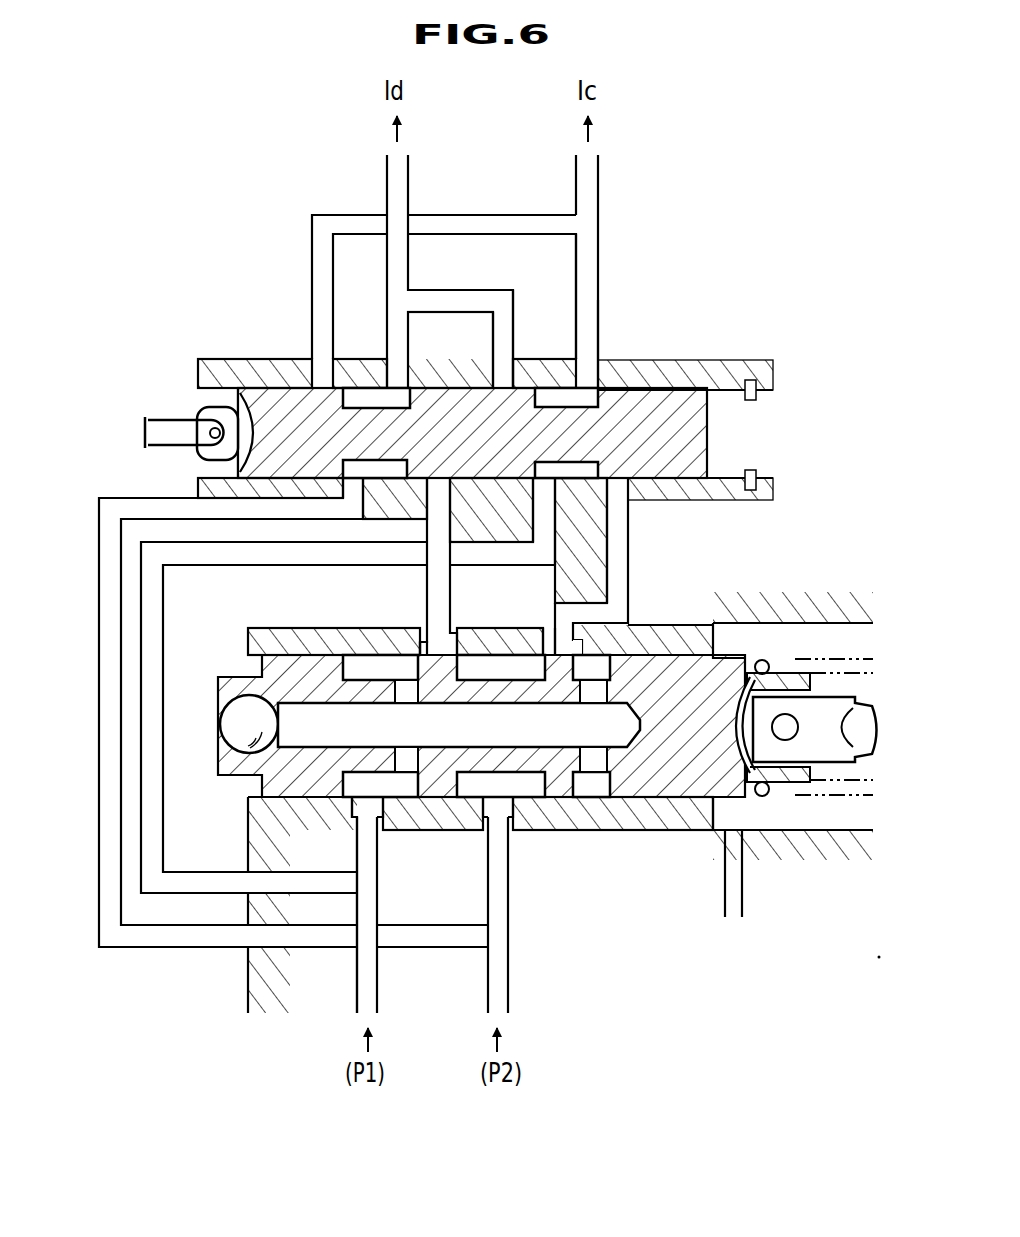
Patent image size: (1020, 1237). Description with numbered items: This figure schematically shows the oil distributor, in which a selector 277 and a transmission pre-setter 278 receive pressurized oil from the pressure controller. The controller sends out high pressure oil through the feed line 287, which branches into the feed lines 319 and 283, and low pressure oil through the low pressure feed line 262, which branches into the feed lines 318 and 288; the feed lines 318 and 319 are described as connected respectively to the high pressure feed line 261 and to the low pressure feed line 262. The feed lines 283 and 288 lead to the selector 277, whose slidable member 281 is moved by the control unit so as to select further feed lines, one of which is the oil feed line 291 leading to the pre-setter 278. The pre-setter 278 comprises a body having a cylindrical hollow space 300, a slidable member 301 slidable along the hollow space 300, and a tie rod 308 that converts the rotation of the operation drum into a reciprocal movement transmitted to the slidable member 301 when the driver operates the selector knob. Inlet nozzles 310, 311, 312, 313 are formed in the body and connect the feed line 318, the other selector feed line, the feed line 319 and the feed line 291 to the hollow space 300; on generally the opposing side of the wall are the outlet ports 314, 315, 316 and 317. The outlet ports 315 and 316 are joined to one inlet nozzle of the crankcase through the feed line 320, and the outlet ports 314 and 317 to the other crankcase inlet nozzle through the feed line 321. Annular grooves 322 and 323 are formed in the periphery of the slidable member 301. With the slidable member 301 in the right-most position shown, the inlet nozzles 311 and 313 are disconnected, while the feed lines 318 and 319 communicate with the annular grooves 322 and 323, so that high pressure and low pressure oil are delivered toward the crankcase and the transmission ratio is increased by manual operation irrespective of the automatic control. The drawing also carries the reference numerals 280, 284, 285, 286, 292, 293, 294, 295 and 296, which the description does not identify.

The high pressure feed line 261 is at (363, 1076).
The low pressure feed line 262 is at (494, 1076).
The selector 277 is at (766, 577).
The transmission pre-setter 278 is at (645, 306).
The lower valve housing 280 is at (258, 653).
The slidable member 281 is at (692, 665).
The feed line 283 is at (377, 812).
The second inlet port 284 is at (503, 812).
The port 285 is at (420, 643).
The port 286 is at (543, 638).
The feed line 287 is at (366, 995).
The feed line 288 is at (497, 995).
The oil feed line 291 is at (363, 662).
The spool groove 292 is at (477, 633).
The spool groove 293 is at (600, 657).
The central bore / rod 294 is at (482, 738).
The cross passage 295 is at (406, 710).
The cross passage 296 is at (588, 750).
The cylindrical hollow space 300 is at (236, 396).
The slidable member 301 is at (707, 443).
The tie rod 308 is at (148, 433).
The inlet nozzle 310 is at (357, 490).
The inlet nozzle 311 is at (440, 490).
The inlet nozzle 312 is at (543, 490).
The inlet nozzle 313 is at (618, 505).
The outlet port 314 is at (314, 365).
The outlet port 315 is at (398, 376).
The outlet port 316 is at (502, 376).
The outlet port 317 is at (587, 362).
The feed line 318 is at (106, 602).
The feed line 319 is at (220, 748).
The feed line 320 is at (398, 181).
The feed line 321 is at (590, 183).
The annular groove 322 is at (373, 400).
The annular groove 323 is at (563, 403).